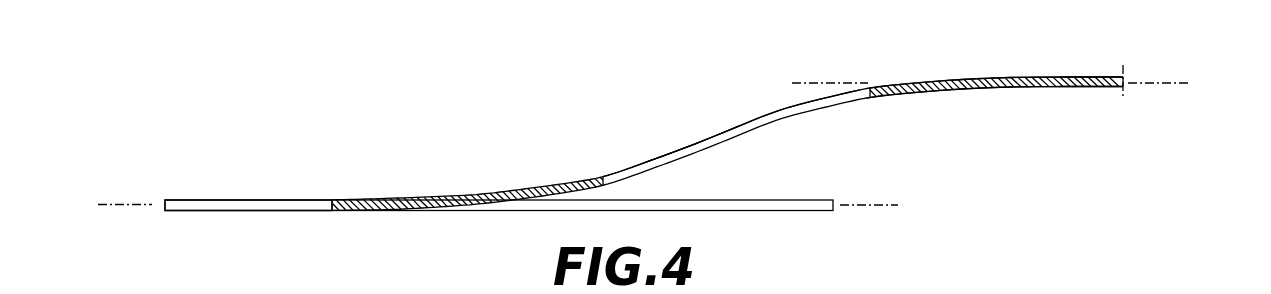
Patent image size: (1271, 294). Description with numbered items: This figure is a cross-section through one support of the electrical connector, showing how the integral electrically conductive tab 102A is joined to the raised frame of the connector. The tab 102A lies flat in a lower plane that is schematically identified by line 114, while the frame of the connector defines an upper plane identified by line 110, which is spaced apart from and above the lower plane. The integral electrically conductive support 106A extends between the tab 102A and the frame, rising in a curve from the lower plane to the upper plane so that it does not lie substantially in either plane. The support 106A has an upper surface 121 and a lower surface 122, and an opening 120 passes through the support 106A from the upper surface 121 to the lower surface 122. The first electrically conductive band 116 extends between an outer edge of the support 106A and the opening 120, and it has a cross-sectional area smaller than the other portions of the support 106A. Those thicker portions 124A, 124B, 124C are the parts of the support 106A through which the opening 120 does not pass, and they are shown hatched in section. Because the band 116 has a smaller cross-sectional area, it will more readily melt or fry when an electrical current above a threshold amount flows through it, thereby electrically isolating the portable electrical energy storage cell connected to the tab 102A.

The integral electrically conductive tab 102A is at (768, 212).
The portion of integral electrically conductive support 124A is at (237, 200).
The portion of integral electrically conductive support 124B is at (567, 180).
The portion of integral electrically conductive support 124C is at (937, 80).
The opening 120 is at (764, 146).
The first electrically conductive band 116 is at (652, 158).
The integral electrically conductive support 106A is at (689, 104).
The upper surface 121 is at (907, 80).
The lower surface 122 is at (888, 98).
The line 110 is at (820, 82).
The line 114 is at (127, 207).